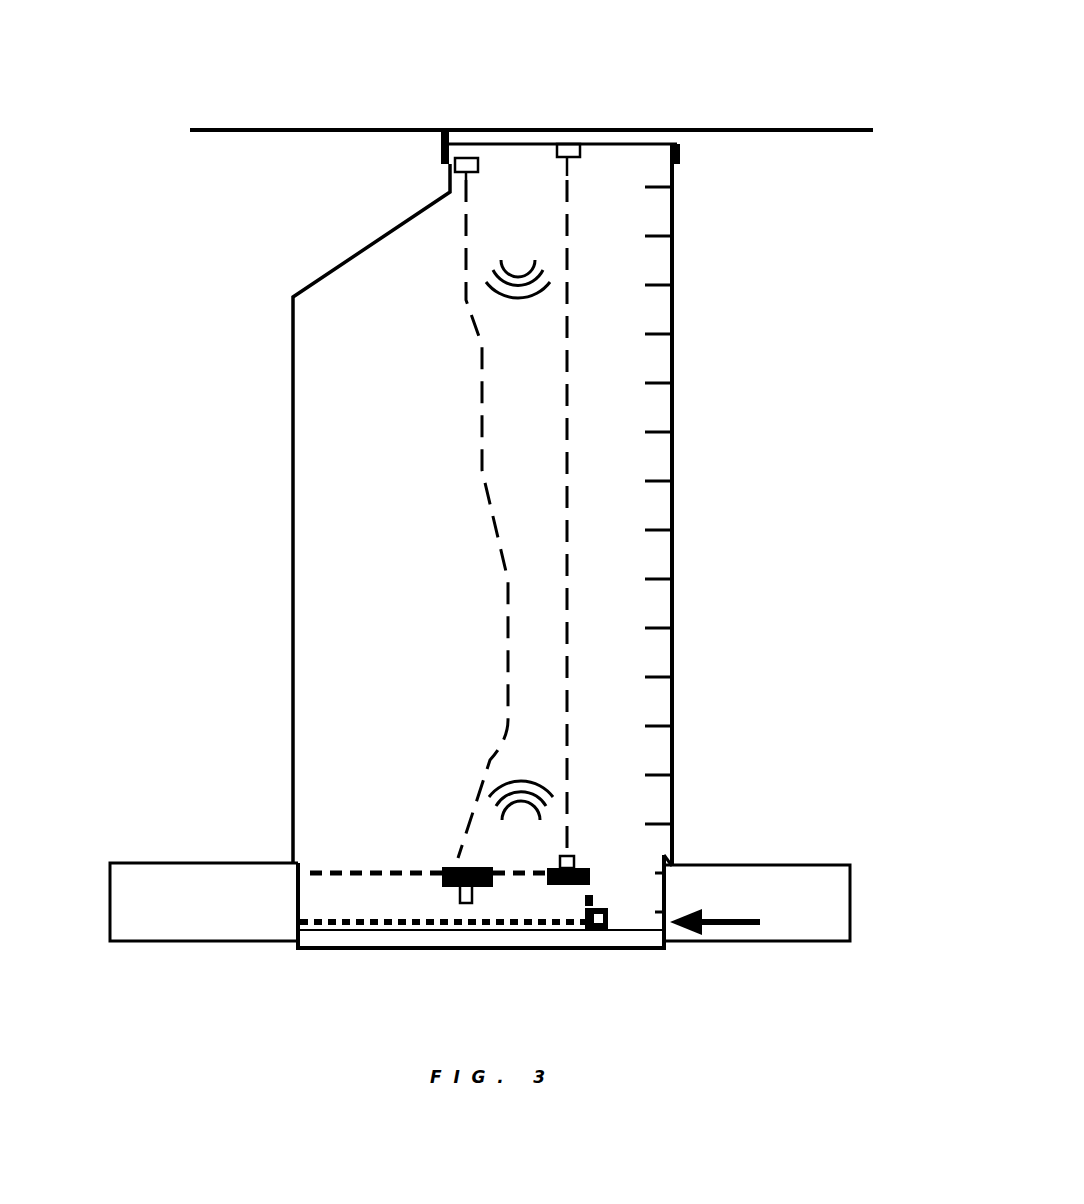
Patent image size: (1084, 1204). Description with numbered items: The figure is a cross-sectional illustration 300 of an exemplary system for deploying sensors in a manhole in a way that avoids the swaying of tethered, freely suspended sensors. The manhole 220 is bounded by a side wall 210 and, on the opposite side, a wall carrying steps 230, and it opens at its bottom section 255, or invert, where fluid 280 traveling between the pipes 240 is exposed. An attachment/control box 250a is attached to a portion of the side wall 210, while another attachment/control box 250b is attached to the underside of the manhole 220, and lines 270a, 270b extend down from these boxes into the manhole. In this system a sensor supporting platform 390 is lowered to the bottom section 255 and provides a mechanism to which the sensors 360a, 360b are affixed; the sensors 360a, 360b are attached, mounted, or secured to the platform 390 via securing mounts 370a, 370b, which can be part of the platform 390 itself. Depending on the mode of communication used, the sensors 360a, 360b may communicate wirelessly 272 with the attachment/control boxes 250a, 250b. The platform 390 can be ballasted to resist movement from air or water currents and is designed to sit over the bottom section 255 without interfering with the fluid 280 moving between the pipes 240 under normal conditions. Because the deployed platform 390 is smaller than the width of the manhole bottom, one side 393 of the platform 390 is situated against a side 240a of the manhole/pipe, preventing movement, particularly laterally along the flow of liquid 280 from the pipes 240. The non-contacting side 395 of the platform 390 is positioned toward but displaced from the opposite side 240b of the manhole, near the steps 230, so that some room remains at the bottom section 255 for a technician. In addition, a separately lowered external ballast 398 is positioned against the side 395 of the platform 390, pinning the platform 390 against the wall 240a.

The cross-sectional illustration 300 is at (888, 25).
The manhole 220 is at (462, 129).
The side wall 210 is at (285, 480).
The steps 230 is at (668, 345).
The bottom section 255 is at (420, 948).
The pipes 240 is at (207, 860).
The side of the manhole/pipe 240a is at (300, 860).
The side of the manhole 240b is at (675, 852).
The attachment/control box 250a is at (476, 176).
The attachment/control box 250b is at (578, 160).
The line 270a is at (477, 335).
The line 270b is at (568, 345).
The wireless communication 272 is at (508, 300).
The sensor supporting platform 390 is at (398, 870).
The securing mount 370a is at (493, 885).
The sensor 360a is at (478, 905).
The securing mount 370b is at (593, 868).
The sensor 360b is at (573, 858).
The side of the platform 393 is at (305, 897).
The non-contacting side 395 is at (594, 900).
The external ballast 398 is at (606, 930).
The fluid 280 is at (737, 930).